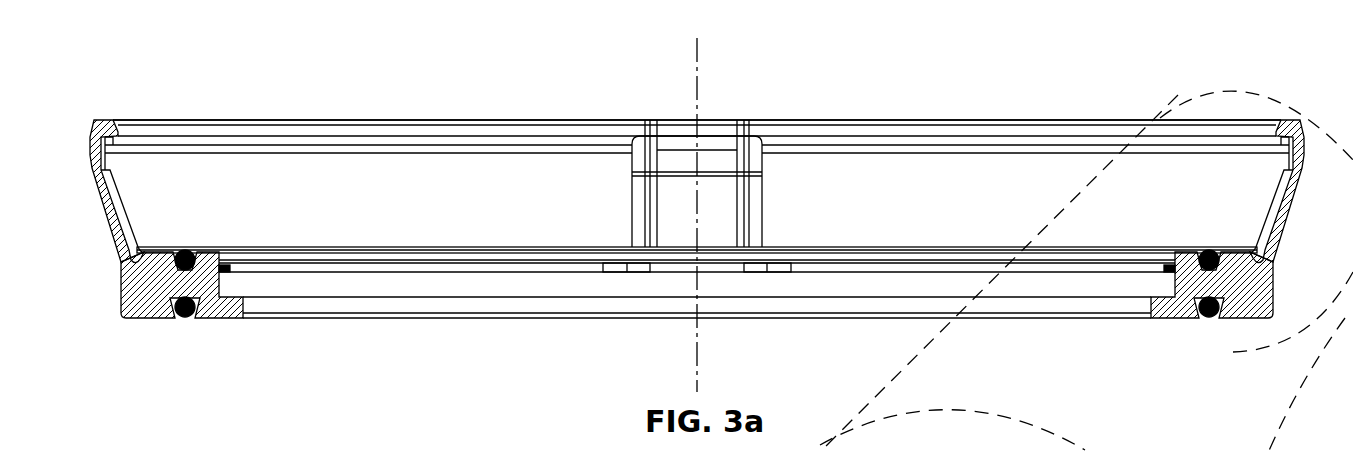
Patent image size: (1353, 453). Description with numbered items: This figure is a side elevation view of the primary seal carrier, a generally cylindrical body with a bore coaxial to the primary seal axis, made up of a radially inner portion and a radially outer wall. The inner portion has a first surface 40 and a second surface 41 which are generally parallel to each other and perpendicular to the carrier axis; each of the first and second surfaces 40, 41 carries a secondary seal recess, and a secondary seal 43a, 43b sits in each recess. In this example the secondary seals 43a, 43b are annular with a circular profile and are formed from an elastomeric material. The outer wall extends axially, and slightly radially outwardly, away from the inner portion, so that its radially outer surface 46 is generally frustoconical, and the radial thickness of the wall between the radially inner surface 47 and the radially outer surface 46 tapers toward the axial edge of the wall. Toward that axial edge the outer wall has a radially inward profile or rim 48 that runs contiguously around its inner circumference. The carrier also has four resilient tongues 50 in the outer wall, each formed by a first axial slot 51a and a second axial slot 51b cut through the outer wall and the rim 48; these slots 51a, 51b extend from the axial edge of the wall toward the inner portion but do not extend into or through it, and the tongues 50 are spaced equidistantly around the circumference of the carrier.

The first surface 40 is at (220, 320).
The second surface 41 is at (205, 250).
The secondary seal 43a is at (185, 250).
The secondary seal 43b is at (187, 320).
The radially outer surface 46 is at (103, 223).
The radially inner surface 47 is at (432, 200).
The rim 48 is at (1030, 452).
The resilient tongue 50 is at (713, 183).
The first axial slot 51a is at (653, 117).
The second axial slot 51b is at (743, 118).